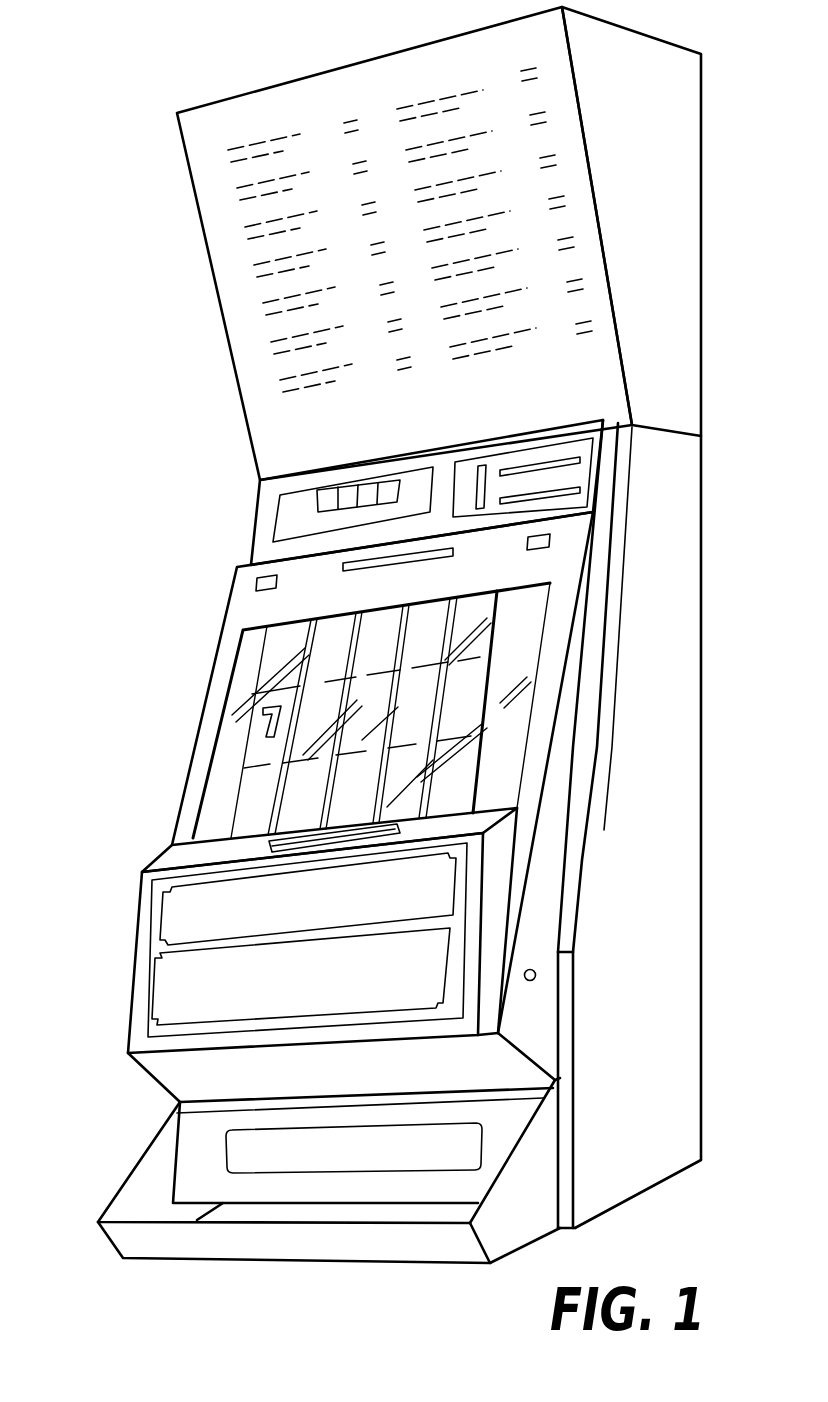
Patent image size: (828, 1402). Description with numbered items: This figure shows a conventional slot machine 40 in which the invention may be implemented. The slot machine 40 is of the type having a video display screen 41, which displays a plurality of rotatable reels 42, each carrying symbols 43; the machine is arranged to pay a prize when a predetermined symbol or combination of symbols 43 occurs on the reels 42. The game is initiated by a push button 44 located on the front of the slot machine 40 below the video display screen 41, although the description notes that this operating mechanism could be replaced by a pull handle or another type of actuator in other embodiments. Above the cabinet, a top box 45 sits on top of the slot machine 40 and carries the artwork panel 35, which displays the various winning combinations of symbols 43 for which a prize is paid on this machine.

The artwork panel 35 is at (218, 240).
The slot machine 40 is at (152, 720).
The video display screen 41 is at (236, 658).
The rotatable reels 42 is at (337, 623).
The symbols 43 is at (257, 730).
The push button 44 is at (290, 849).
The top box 45 is at (238, 402).